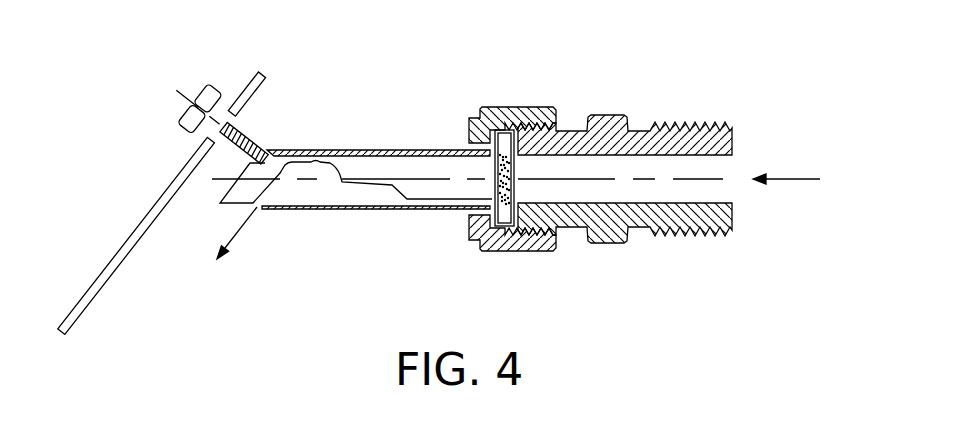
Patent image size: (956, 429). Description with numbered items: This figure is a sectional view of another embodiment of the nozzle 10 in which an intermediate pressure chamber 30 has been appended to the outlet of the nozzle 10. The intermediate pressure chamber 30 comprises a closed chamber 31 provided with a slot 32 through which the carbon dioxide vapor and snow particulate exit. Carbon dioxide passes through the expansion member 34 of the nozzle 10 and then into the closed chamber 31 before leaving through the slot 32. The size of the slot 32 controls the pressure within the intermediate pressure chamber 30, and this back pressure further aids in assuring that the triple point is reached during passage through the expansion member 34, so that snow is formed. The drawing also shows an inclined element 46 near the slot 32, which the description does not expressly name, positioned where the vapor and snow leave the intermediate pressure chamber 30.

The nozzle 10 is at (601, 78).
The intermediate pressure chamber 30 is at (376, 150).
The closed chamber 31 is at (302, 191).
The slot 32 is at (256, 206).
The expansion member 34 is at (507, 172).
The mounting wall 46 is at (95, 282).